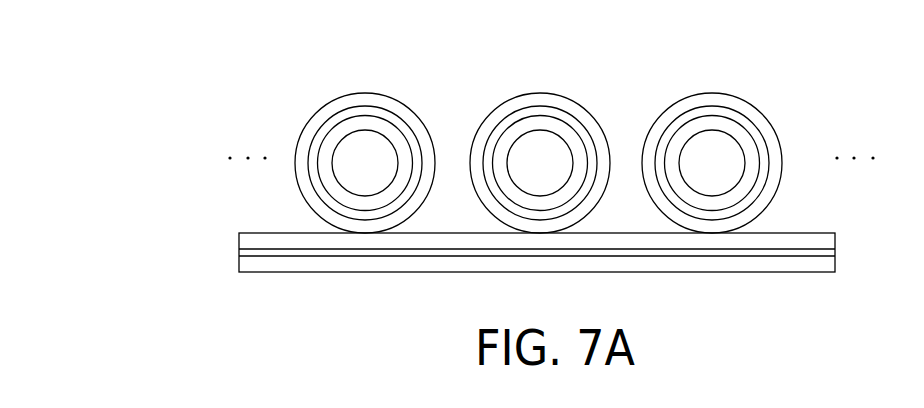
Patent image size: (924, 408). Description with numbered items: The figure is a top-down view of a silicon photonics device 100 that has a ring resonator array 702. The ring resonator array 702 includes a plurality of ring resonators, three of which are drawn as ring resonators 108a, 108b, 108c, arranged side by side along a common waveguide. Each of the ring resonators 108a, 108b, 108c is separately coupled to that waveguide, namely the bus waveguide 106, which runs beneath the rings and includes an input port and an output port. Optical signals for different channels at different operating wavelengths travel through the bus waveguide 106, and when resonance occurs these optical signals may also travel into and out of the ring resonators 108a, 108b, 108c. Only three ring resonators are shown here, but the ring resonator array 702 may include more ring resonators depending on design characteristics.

The silicon photonics device 100 is at (185, 108).
The bus waveguide 106 is at (836, 252).
The ring resonator 108a is at (325, 130).
The ring resonator 108b is at (500, 128).
The ring resonator 108c is at (673, 128).
The ring resonator array 702 is at (800, 110).